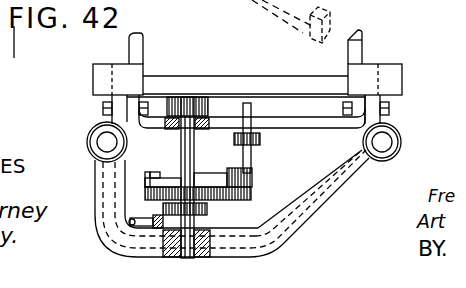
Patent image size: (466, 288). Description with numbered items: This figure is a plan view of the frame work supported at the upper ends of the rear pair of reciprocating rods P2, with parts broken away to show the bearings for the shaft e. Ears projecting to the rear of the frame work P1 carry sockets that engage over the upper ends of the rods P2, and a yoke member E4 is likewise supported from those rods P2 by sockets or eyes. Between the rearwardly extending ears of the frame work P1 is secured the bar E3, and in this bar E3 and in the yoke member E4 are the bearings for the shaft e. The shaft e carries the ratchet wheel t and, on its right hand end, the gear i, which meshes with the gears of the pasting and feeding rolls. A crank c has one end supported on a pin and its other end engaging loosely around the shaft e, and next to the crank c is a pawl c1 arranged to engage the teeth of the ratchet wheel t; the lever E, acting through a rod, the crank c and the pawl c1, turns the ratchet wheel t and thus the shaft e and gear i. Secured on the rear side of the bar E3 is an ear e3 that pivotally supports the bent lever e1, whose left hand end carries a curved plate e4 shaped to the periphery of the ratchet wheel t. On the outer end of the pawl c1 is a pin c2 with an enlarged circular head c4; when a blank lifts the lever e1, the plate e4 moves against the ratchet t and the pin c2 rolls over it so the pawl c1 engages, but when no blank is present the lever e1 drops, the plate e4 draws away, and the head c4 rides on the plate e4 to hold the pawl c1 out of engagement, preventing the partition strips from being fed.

The frame work P1 is at (170, 82).
The reciprocating rods P2 is at (107, 141).
The lever E is at (133, 223).
The bar E3 is at (318, 126).
The yoke member E4 is at (340, 190).
The gear i is at (208, 105).
The shaft e is at (193, 155).
The bent lever e1 is at (248, 150).
The ear e3 is at (260, 140).
The curved plate e4 is at (247, 178).
The ratchet wheel t is at (236, 192).
The crank c is at (208, 205).
The pawl c1 is at (150, 221).
The pin c2 is at (153, 174).
The enlarged circular head c4 is at (149, 173).